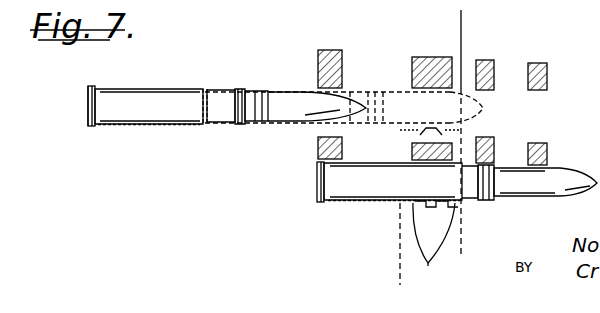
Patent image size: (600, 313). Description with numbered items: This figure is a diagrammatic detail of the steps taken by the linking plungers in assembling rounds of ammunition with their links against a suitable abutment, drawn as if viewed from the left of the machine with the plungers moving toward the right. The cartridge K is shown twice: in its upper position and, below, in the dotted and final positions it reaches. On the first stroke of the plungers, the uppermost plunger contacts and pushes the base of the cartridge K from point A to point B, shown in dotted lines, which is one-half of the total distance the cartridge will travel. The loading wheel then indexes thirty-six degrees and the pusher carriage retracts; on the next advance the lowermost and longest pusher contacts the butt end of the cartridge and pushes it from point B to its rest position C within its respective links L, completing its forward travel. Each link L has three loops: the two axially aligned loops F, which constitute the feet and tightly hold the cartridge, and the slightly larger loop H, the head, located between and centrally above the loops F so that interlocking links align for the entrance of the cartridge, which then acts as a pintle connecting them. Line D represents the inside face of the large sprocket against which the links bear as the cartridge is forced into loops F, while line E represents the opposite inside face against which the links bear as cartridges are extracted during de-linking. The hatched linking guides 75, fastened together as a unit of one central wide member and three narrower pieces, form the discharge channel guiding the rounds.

The linking guides 75 is at (411, 62).
The point A is at (88, 136).
The point B is at (203, 136).
The rest position C is at (316, 206).
The line D is at (459, 24).
The line E is at (398, 268).
The loops F is at (432, 271).
The loop H is at (435, 232).
The cartridge K is at (178, 100).
The links L is at (412, 131).